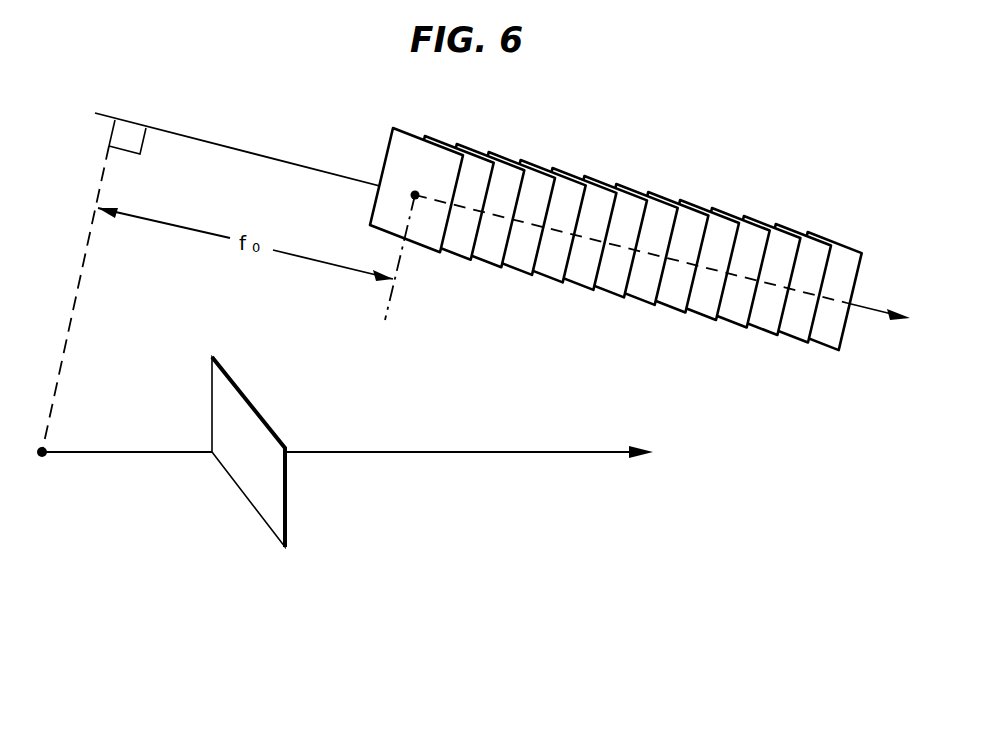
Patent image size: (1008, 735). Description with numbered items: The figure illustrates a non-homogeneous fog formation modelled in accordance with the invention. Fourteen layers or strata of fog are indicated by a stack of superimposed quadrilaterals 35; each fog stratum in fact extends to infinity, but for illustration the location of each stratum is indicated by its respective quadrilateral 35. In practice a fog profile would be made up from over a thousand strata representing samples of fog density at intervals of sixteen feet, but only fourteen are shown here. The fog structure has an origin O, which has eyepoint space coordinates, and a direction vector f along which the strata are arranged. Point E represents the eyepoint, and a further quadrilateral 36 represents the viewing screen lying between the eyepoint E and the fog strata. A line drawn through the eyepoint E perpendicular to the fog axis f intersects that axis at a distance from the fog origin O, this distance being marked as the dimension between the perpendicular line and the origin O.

The quadrilateral 35 is at (455, 143).
The viewing screen 36 is at (287, 487).
The origin O is at (410, 184).
The eyepoint E is at (41, 465).
The direction vector f is at (662, 271).